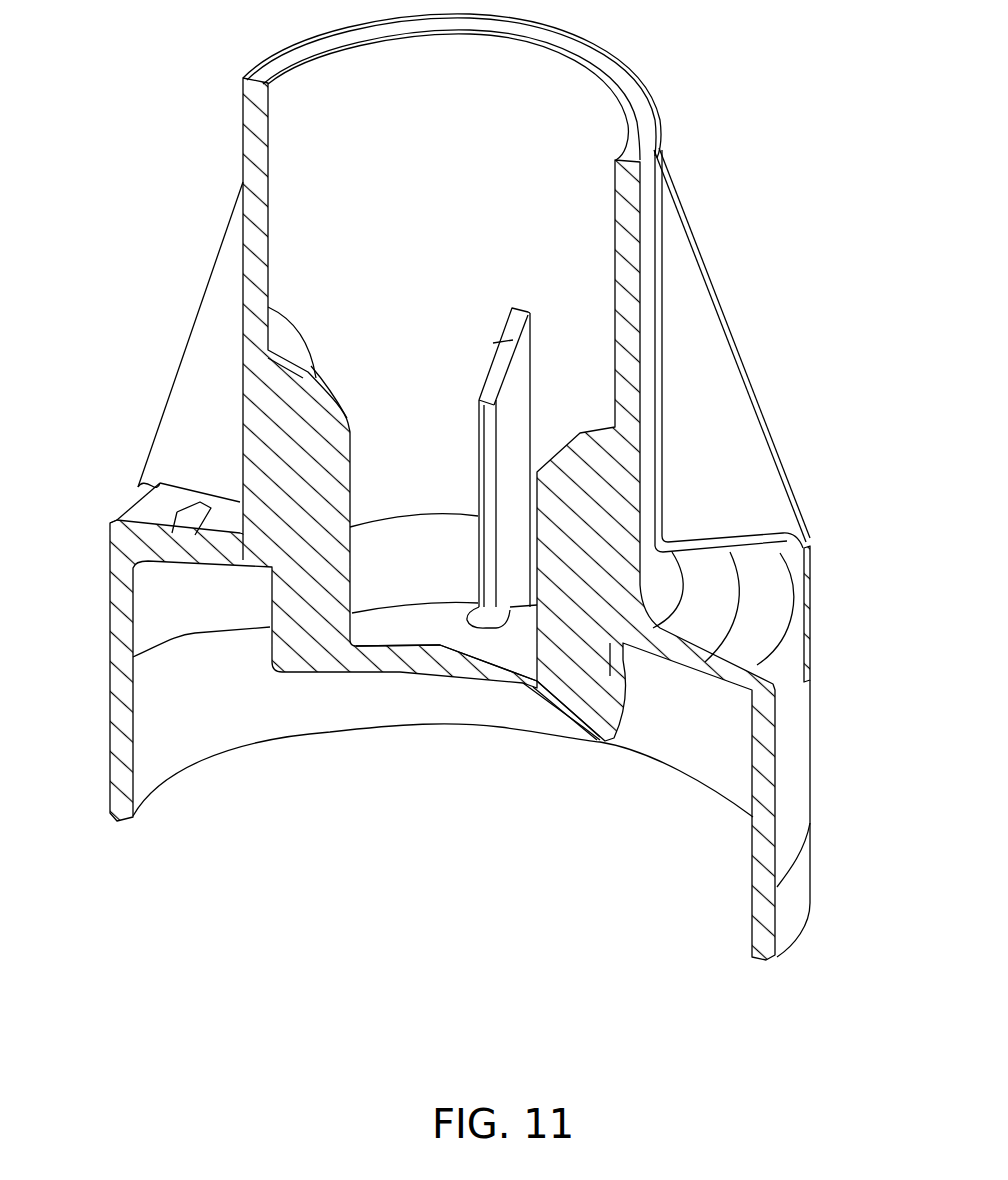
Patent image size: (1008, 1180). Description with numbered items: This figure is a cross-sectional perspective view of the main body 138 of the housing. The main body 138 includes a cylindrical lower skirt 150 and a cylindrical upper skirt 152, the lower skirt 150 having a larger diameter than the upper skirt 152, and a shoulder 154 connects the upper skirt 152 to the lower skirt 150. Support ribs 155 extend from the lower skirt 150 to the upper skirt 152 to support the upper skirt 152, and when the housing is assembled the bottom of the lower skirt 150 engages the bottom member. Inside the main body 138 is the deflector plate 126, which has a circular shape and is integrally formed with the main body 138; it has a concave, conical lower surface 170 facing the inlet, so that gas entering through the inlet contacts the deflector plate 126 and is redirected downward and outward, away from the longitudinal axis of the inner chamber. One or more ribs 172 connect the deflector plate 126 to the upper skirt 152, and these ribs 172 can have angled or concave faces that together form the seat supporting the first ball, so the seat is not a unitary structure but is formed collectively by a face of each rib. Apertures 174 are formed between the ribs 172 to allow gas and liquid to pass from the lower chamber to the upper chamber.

The main body 138 is at (464, 487).
The upper skirt 152 is at (657, 204).
The support ribs 155 is at (735, 347).
The shoulder 154 is at (717, 610).
The lower skirt 150 is at (792, 798).
The ribs 172 is at (487, 357).
The apertures 174 is at (450, 587).
The deflector plate 126 is at (493, 645).
The concave, conical lower surface 170 is at (516, 698).